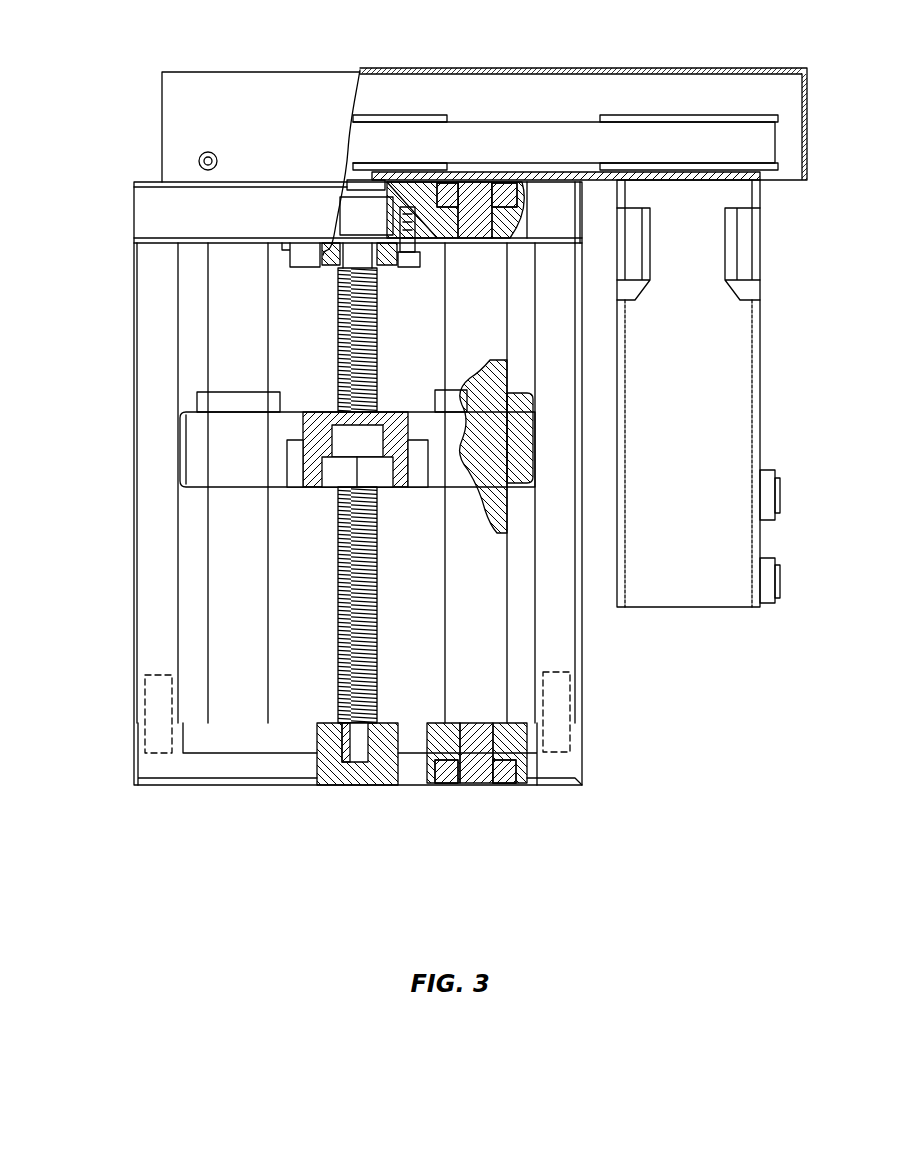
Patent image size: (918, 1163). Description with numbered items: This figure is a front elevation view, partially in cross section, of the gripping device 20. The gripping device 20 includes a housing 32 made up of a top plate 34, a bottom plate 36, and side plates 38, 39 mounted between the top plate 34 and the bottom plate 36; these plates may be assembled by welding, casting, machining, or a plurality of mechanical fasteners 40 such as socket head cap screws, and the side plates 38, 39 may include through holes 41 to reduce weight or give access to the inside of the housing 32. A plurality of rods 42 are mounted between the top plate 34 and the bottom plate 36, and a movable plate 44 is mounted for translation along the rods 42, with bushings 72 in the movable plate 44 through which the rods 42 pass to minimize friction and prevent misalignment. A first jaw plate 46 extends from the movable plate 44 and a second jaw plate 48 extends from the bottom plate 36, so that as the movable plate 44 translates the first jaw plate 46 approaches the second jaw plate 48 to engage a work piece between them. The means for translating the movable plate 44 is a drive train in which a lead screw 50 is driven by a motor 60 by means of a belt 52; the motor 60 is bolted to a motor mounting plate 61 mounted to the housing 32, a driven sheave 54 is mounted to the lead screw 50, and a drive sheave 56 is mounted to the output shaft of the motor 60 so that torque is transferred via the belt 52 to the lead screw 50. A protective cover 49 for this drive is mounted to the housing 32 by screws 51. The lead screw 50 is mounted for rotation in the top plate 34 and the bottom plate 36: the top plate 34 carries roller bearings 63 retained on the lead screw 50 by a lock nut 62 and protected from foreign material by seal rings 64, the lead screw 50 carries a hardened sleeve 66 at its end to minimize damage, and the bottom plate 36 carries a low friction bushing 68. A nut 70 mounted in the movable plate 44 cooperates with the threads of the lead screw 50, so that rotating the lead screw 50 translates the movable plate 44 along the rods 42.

The gripping device 20 is at (672, 750).
The housing 32 is at (73, 335).
The top plate 34 is at (135, 215).
The bottom plate 36 is at (135, 757).
The side plate 38 is at (135, 475).
The side plate 39 is at (578, 640).
The mechanical fasteners 40 is at (158, 776).
The through holes 41 is at (451, 775).
The rods 42 is at (258, 612).
The movable plate 44 is at (357, 449).
The first jaw plate 46 is at (418, 462).
The second jaw plate 48 is at (381, 775).
The protective cover 49 is at (287, 77).
The lead screw 50 is at (366, 361).
The screws 51 is at (209, 152).
The belt 52 is at (531, 142).
The driven sheave 54 is at (372, 115).
The drive sheave 56 is at (688, 116).
The motor 60 is at (759, 383).
The motor mounting plate 61 is at (684, 181).
The lock nut 62 is at (355, 183).
The roller bearings 63 is at (355, 230).
The seal rings 64 is at (385, 257).
The sleeve 66 is at (340, 258).
The low friction bushing 68 is at (345, 740).
The nut 70 is at (335, 473).
The bushings 72 is at (237, 400).